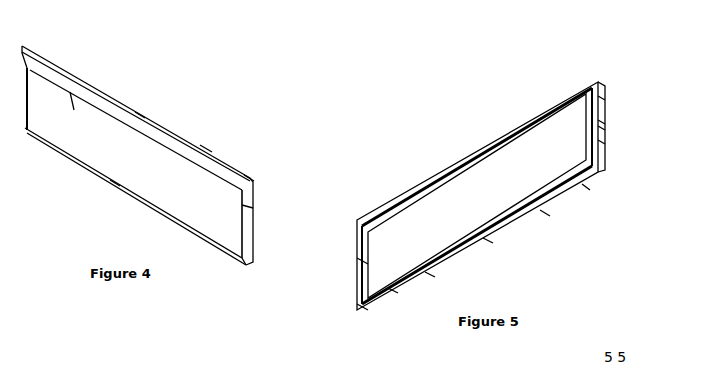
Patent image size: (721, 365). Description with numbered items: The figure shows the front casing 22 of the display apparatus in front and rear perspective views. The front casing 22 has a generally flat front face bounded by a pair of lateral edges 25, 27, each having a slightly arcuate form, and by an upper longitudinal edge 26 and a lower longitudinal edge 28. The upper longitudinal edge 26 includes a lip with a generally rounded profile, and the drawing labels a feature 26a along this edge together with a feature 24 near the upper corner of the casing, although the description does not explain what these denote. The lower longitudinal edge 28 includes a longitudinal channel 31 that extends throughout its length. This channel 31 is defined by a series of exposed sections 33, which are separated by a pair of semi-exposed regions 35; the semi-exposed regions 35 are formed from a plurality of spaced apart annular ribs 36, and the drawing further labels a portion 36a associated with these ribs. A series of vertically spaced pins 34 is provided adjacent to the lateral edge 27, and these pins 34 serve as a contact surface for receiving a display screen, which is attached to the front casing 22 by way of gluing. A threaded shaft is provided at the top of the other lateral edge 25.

In FIG. 4, the front casing 22 is at (245, 264).
In FIG. 5, the front casing 22 is at (587, 81).
In FIG. 4, the top edge 24 is at (250, 178).
In FIG. 4, the lateral edge 25 is at (255, 212).
In FIG. 5, the lateral edge 25 is at (357, 263).
In FIG. 4, the upper longitudinal edge 26 is at (140, 115).
In FIG. 4, the top surface lip 26a is at (72, 104).
In FIG. 5, the lateral edge 27 is at (609, 122).
In FIG. 4, the lower longitudinal edge 28 is at (207, 151).
In FIG. 5, the longitudinal channel 31 is at (357, 310).
In FIG. 5, the exposed sections 33 is at (393, 293).
In FIG. 5, the pins 34 is at (607, 100).
In FIG. 5, the semi-exposed regions 35 is at (430, 277).
In FIG. 5, the annular ribs 36 is at (607, 126).
In FIG. 5, the side member portion 36a is at (609, 140).